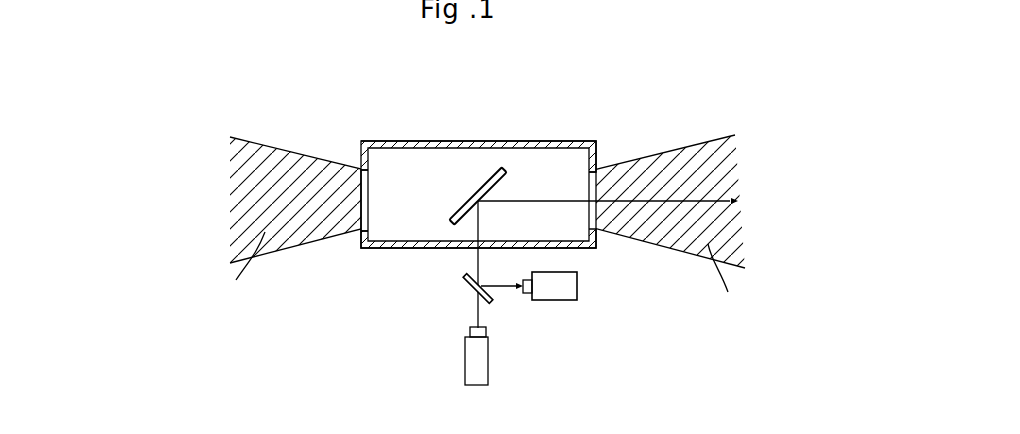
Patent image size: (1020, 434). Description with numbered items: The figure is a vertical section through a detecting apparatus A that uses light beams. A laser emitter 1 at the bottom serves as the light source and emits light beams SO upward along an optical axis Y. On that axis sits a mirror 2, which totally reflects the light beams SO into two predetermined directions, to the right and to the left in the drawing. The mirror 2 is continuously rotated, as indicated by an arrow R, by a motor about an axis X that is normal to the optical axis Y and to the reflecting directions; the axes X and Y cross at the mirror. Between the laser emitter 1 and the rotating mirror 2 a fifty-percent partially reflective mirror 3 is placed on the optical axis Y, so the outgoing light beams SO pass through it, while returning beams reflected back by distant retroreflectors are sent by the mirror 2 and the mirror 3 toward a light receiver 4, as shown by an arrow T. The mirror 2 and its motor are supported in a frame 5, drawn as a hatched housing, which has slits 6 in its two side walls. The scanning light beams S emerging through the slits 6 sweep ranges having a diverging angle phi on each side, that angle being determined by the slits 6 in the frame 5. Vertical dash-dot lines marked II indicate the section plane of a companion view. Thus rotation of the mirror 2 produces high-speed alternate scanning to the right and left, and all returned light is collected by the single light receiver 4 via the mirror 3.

The laser emitter 1 is at (482, 365).
The mirror 2 is at (504, 170).
The partially reflective mirror 3 is at (465, 279).
The light receiver 4 is at (553, 301).
The frame 5 is at (571, 143).
The slits 6 is at (362, 180).
The light beams S is at (483, 226).
The light beams SO is at (477, 308).
The arrow T is at (508, 288).
The axis X is at (478, 196).
The optical axis Y is at (478, 196).
The arrow R is at (490, 161).
The detecting apparatus A is at (629, 102).
The diverging angle phi is at (303, 268).
The section line II is at (365, 200).